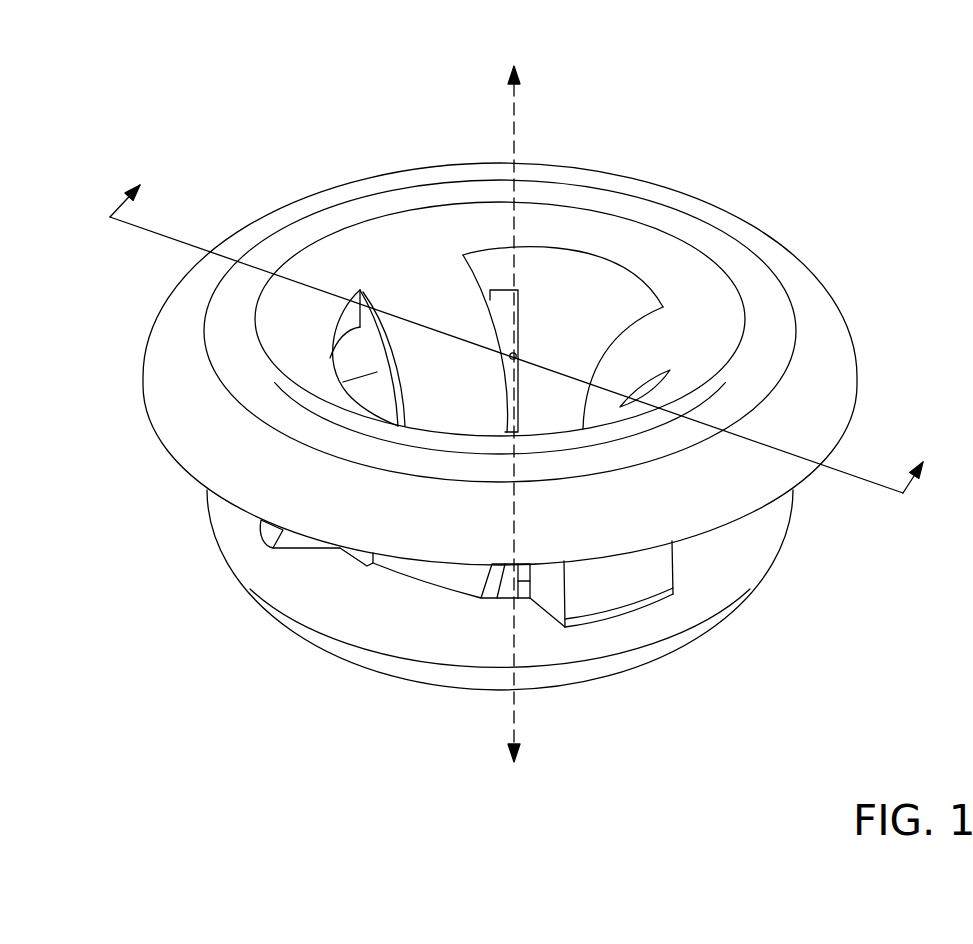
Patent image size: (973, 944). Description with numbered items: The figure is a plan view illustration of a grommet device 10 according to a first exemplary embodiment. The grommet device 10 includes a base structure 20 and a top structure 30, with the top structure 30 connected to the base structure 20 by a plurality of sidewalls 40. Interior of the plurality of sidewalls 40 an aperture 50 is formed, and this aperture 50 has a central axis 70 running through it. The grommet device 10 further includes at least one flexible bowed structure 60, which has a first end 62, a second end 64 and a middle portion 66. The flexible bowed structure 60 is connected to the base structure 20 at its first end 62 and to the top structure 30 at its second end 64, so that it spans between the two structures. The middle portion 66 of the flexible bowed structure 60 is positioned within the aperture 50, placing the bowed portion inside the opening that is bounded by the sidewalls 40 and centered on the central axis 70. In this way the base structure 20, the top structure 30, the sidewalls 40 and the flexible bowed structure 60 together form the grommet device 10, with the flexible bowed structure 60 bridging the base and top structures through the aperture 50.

The grommet device 10 is at (870, 70).
The base structure 20 is at (743, 568).
The top structure 30 is at (765, 307).
The sidewalls 40 is at (650, 349).
The aperture 50 is at (349, 364).
The flexible bowed structure 60 is at (565, 315).
The first end 62 is at (455, 577).
The second end 64 is at (433, 293).
The middle portion 66 is at (453, 398).
The central axis 70 is at (514, 133).